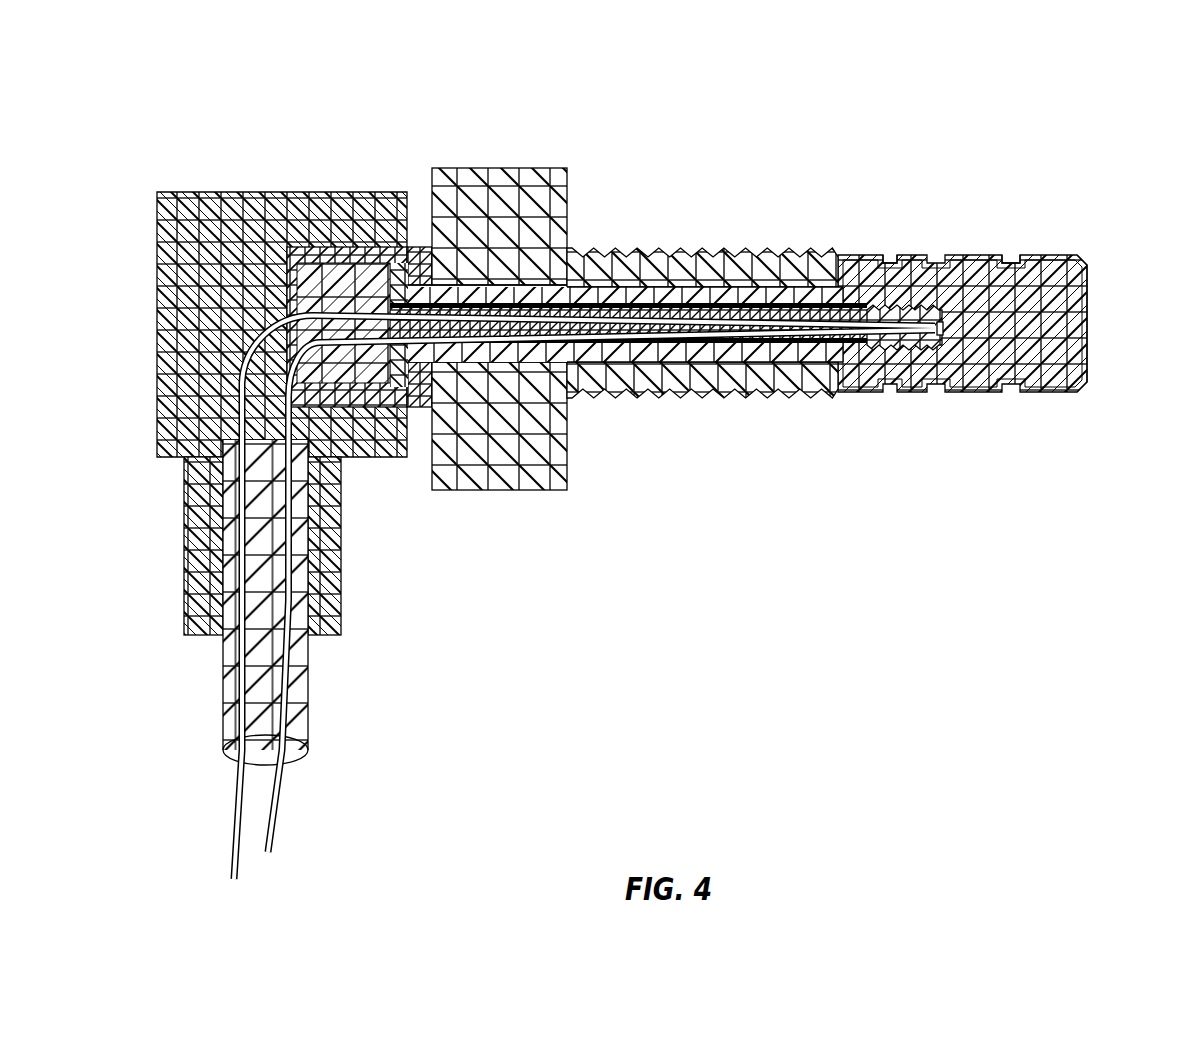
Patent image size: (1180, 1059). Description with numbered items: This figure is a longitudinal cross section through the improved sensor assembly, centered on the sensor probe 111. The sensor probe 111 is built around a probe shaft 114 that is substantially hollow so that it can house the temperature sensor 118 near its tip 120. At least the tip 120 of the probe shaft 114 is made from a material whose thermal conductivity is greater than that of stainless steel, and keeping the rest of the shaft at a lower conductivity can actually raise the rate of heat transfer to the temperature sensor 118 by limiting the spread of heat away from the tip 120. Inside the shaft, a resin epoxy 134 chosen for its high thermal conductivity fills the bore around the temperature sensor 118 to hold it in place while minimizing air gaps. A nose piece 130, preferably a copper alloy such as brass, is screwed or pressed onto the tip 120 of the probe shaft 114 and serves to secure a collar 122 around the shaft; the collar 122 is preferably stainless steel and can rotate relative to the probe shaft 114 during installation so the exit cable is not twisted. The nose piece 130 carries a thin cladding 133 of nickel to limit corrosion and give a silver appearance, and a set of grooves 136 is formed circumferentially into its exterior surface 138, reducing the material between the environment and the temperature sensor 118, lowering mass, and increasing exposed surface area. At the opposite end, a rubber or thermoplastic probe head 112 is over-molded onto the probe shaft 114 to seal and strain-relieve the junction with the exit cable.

The sensor probe 111 is at (601, 100).
The probe head 112 is at (155, 255).
The probe shaft 114 is at (677, 257).
The temperature sensor 118 is at (897, 327).
The tip 120 is at (845, 302).
The collar 122 is at (520, 460).
The nose piece 130 is at (1073, 335).
The cladding 133 is at (972, 255).
The resin epoxy 134 is at (665, 347).
The grooves 136 is at (1012, 260).
The exterior surface 138 is at (1050, 392).